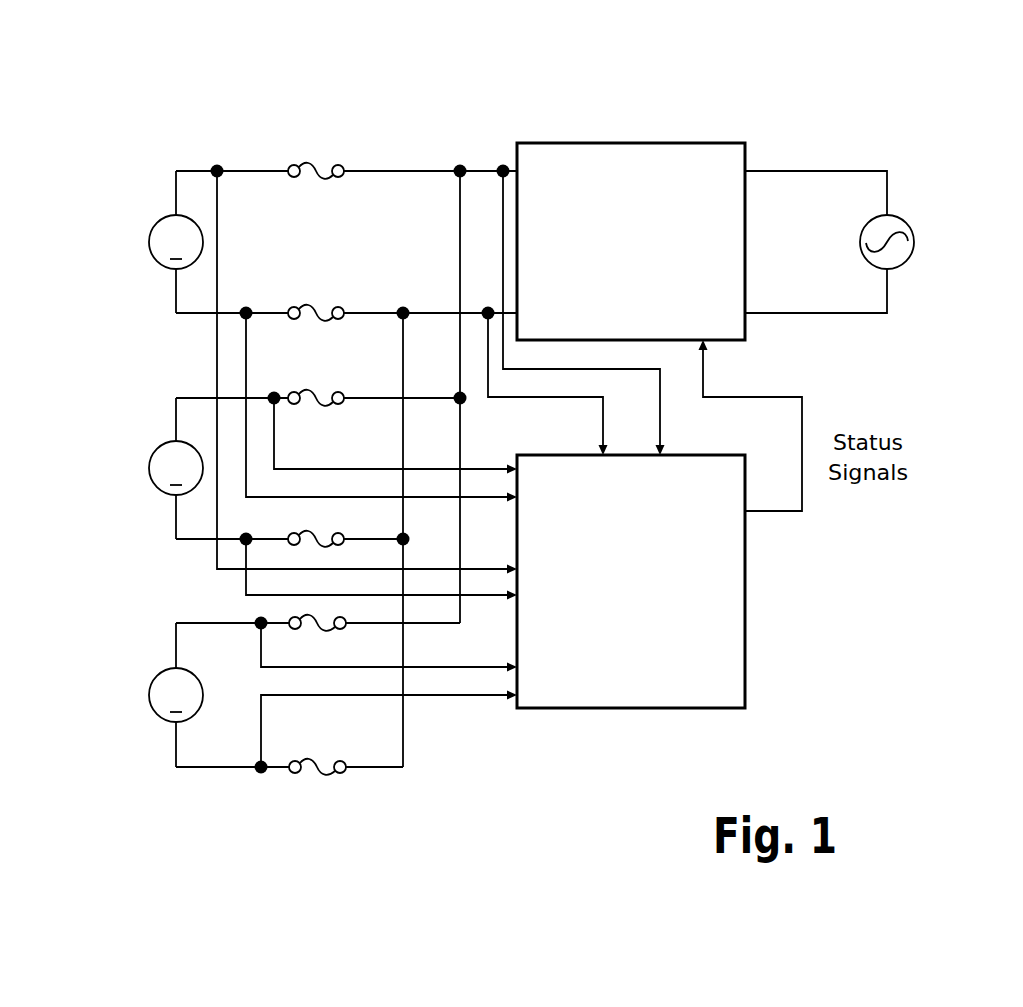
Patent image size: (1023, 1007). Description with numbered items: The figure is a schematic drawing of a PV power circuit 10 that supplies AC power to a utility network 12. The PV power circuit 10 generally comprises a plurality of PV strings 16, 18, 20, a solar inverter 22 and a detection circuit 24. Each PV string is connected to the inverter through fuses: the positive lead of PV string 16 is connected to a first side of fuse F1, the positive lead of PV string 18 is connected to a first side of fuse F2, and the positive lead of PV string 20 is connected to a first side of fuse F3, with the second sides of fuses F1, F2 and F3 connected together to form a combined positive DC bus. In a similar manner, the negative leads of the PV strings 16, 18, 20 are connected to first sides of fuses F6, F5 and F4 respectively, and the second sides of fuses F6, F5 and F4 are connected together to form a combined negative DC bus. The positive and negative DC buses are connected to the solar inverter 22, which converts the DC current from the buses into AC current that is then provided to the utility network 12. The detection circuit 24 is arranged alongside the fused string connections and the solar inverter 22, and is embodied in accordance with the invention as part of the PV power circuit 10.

The PV power circuit 10 is at (94, 114).
The utility network 12 is at (914, 243).
The PV string 16 is at (138, 241).
The PV string 18 is at (138, 468).
The PV string 20 is at (138, 695).
The solar inverter 22 is at (631, 241).
The detection circuit 24 is at (631, 581).
The fuse F1 is at (316, 156).
The fuse F2 is at (316, 384).
The fuse F3 is at (319, 636).
The fuse F4 is at (317, 753).
The fuse F5 is at (316, 526).
The fuse F6 is at (316, 299).